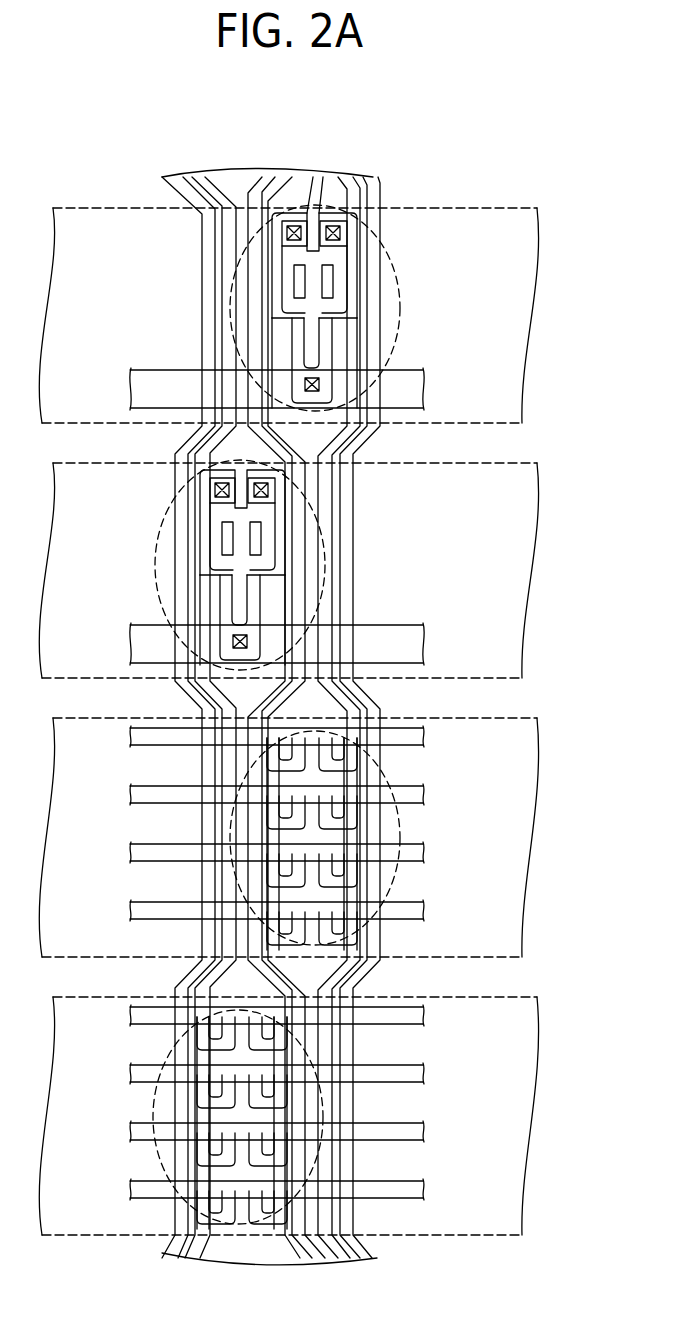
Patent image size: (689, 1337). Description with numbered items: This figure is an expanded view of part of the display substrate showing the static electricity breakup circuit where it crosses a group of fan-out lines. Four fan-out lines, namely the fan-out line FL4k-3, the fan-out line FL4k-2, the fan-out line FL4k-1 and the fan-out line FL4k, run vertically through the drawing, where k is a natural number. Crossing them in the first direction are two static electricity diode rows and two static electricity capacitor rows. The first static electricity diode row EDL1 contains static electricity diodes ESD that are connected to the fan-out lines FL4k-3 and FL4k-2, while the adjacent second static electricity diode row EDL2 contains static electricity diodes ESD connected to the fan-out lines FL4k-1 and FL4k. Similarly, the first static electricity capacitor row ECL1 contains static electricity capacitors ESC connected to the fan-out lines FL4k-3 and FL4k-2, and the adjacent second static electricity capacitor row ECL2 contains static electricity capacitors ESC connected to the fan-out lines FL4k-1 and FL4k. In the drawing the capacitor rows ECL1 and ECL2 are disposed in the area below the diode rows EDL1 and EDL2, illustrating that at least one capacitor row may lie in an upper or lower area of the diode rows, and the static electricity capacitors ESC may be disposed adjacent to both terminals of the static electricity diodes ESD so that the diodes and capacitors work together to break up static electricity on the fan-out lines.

The (4k)-th fan-out line FL4k is at (360, 182).
The (4k-1)-th fan-out line FL4k-1 is at (297, 183).
The (4k-2)-th fan-out line FL4k-2 is at (273, 177).
The (4k-3)-th fan-out line FL4k-3 is at (203, 177).
The static electricity diode ESD is at (400, 293).
The static electricity capacitor ESC is at (401, 823).
The first static electricity diode row EDL1 is at (532, 570).
The second static electricity diode row EDL2 is at (532, 316).
The first static electricity capacitor row ECL1 is at (532, 1114).
The second static electricity capacitor row ECL2 is at (532, 837).